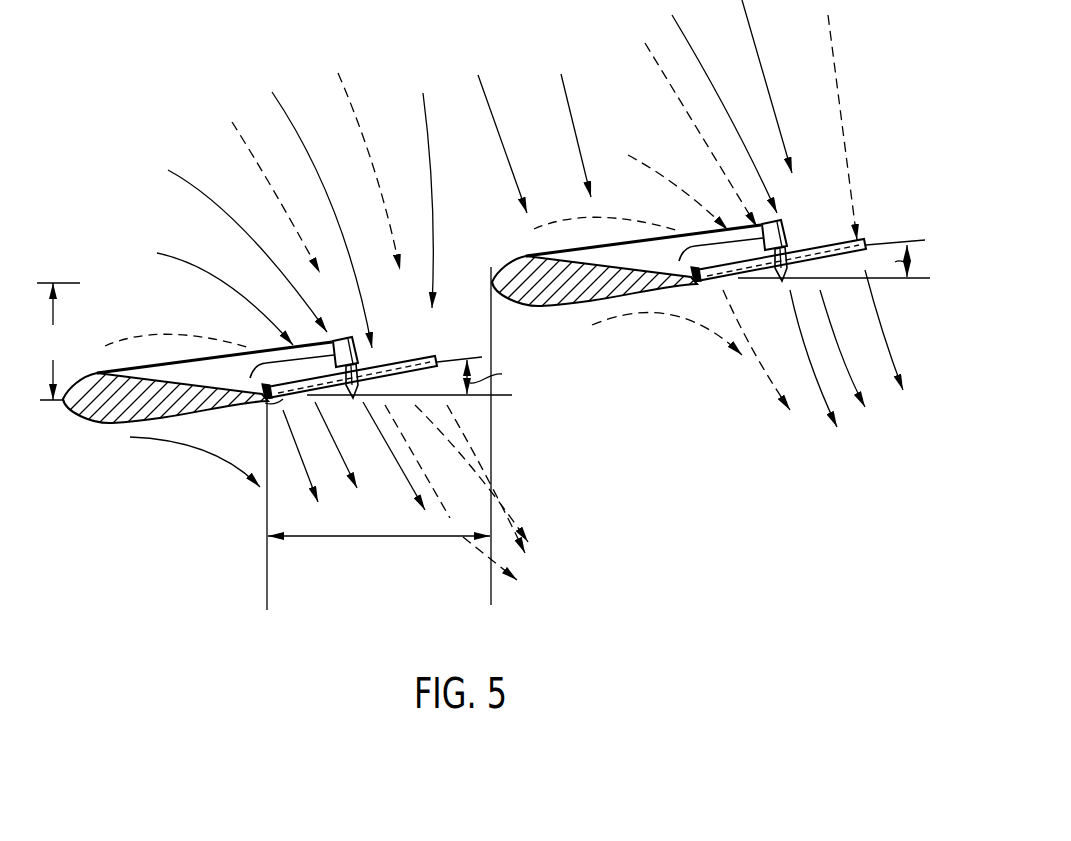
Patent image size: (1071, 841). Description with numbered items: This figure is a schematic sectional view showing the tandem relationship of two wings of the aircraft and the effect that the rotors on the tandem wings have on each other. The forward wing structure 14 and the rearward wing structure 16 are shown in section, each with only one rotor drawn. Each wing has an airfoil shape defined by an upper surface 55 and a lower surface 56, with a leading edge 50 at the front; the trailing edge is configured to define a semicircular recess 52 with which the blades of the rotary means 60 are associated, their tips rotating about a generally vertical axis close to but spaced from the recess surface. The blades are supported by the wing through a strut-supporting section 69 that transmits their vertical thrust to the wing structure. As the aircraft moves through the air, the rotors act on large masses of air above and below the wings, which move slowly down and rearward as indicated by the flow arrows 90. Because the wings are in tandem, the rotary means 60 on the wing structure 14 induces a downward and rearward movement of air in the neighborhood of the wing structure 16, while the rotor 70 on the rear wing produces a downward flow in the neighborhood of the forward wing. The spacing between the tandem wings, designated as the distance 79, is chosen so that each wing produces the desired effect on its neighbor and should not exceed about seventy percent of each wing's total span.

The wing structure 14 is at (122, 303).
The wing structure 16 is at (558, 243).
The leading edge 50 is at (63, 405).
The semicircular recess 52 is at (268, 403).
The upper surface 55 is at (98, 372).
The lower surface 56 is at (118, 423).
The rotary means 60 is at (397, 363).
The strut-supporting section 69 is at (273, 367).
The rotor 70 is at (808, 252).
The spacing distance 79 is at (380, 535).
The flow arrows 90 is at (247, 238).